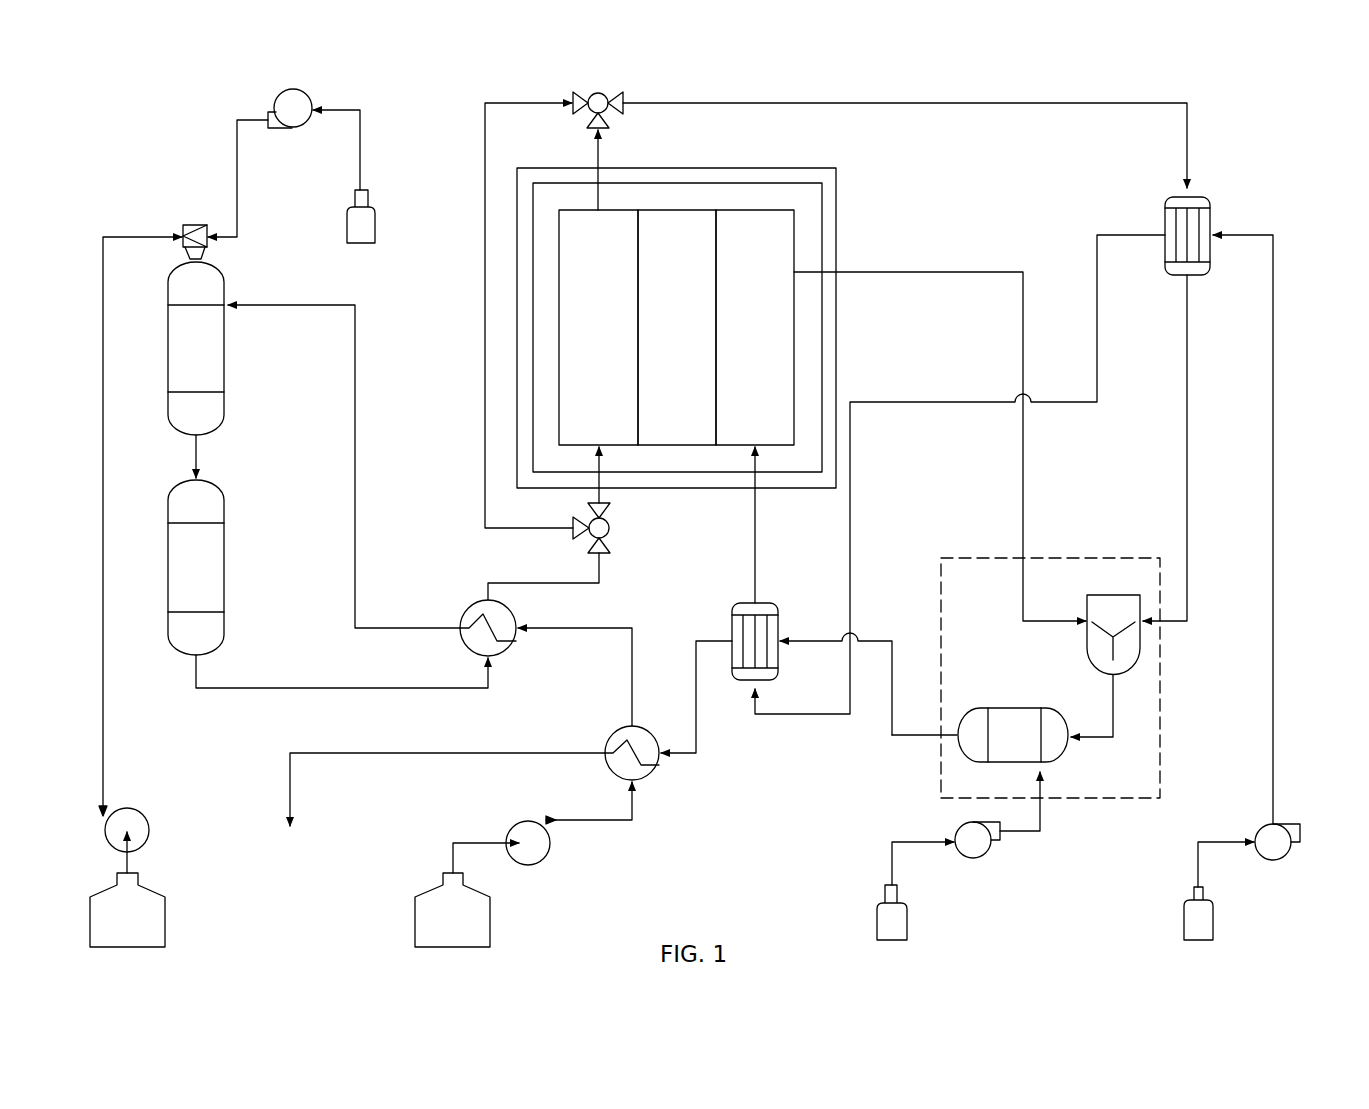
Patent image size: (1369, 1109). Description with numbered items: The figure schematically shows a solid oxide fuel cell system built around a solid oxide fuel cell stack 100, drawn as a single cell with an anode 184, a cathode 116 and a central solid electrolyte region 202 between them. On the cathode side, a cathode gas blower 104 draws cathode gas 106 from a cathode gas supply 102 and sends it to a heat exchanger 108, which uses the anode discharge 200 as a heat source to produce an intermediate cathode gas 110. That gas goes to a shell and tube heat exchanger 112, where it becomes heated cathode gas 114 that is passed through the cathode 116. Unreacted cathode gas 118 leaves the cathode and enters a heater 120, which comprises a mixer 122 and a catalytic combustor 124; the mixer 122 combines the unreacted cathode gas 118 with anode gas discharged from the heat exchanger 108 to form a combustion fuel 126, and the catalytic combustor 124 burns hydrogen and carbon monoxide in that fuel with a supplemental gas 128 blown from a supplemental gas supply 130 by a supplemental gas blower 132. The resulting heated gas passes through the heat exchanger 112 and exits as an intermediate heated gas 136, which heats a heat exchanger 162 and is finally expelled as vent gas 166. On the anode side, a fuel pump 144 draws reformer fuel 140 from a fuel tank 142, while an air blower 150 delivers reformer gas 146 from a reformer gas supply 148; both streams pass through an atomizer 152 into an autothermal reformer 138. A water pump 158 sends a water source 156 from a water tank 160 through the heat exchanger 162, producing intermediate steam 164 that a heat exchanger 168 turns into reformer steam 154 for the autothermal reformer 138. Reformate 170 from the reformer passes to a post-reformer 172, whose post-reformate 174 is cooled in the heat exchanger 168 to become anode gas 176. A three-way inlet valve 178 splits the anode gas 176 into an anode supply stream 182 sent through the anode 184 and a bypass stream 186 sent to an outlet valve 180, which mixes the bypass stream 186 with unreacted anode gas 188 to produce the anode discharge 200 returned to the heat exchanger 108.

The solid oxide fuel cell stack 100 is at (837, 215).
The cathode gas supply 102 is at (1213, 918).
The cathode gas blower 104 is at (1294, 855).
The cathode gas 106 is at (1273, 695).
The heat exchanger 108 is at (1212, 203).
The intermediate cathode gas 110 is at (940, 402).
The heat exchanger 112 is at (778, 610).
The heated cathode gas 114 is at (755, 540).
The cathode 116 is at (755, 327).
The unreacted cathode gas 118 is at (960, 272).
The heater 120 is at (1160, 675).
The mixer 122 is at (1087, 640).
The catalytic combustor 124 is at (1068, 752).
The combustion fuel 126 is at (1098, 735).
The supplemental gas 128 is at (1044, 815).
The supplemental gas supply 130 is at (907, 922).
The supplemental gas blower 132 is at (990, 852).
The intermediate heated gas 136 is at (696, 730).
The autothermal reformer 138 is at (225, 345).
The reformer fuel 140 is at (103, 530).
The fuel tank 142 is at (165, 918).
The fuel pump 144 is at (148, 822).
The reformer gas 146 is at (237, 175).
The reformer gas supply 148 is at (375, 232).
The air blower 150 is at (312, 98).
The atomizer 152 is at (195, 222).
The reformer steam 154 is at (355, 468).
The water source 156 is at (585, 819).
The water pump 158 is at (550, 845).
The water tank 160 is at (490, 918).
The heat exchanger 162 is at (657, 768).
The intermediate steam 164 is at (625, 628).
The vent gas 166 is at (445, 753).
The heat exchanger 168 is at (512, 645).
The reformate 170 is at (198, 458).
The post-reformer 172 is at (225, 567).
The post-reformate 174 is at (340, 688).
The anode gas 176 is at (488, 583).
The inlet valve 178 is at (612, 530).
The outlet valve 180 is at (625, 112).
The anode supply stream 182 is at (598, 490).
The anode 184 is at (598, 327).
The bypass stream 186 is at (485, 320).
The unreacted anode gas 188 is at (598, 158).
The anode discharge 200 is at (1170, 103).
The reactor zone 202 is at (677, 327).